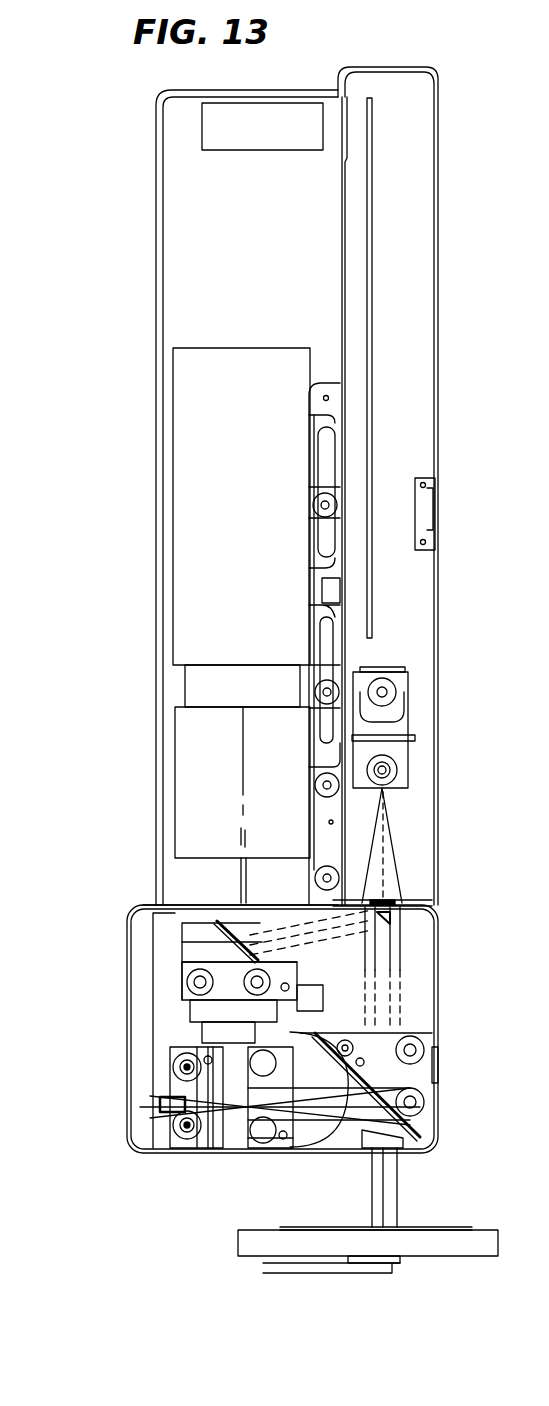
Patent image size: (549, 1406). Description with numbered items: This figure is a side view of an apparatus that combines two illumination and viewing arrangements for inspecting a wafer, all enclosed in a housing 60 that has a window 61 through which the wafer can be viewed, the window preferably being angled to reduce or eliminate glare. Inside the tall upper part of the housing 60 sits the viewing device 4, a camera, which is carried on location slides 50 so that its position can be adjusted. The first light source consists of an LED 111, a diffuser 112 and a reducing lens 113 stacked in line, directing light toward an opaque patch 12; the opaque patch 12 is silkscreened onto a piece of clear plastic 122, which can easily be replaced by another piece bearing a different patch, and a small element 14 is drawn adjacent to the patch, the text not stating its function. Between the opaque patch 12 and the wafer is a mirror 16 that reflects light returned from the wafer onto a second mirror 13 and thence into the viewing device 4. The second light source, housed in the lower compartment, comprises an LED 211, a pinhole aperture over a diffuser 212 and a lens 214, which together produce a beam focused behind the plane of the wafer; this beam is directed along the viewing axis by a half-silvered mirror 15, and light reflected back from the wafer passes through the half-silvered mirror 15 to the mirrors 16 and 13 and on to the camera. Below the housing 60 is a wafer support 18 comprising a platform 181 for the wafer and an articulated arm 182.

The housing 60 is at (155, 233).
The viewing device 4 is at (192, 458).
The location slides 50 is at (327, 452).
The LED 111 is at (393, 712).
The diffuser 112 is at (415, 738).
The reducing lens 113 is at (393, 775).
The opaque patch 12 is at (387, 900).
The piece of clear plastic 122 is at (420, 905).
The reflecting mirror 14 is at (395, 918).
The mirror 16 is at (395, 922).
The second mirror 13 is at (227, 935).
The half-silvered mirror 15 is at (434, 1106).
The window 61 is at (428, 1148).
The pinhole aperture over a diffuser 212 is at (160, 1085).
The LED 211 is at (165, 1110).
The lens 214 is at (312, 1150).
The platform 181 is at (238, 1245).
The articulated arm 182 is at (322, 1270).
The wafer support 18 is at (404, 1269).